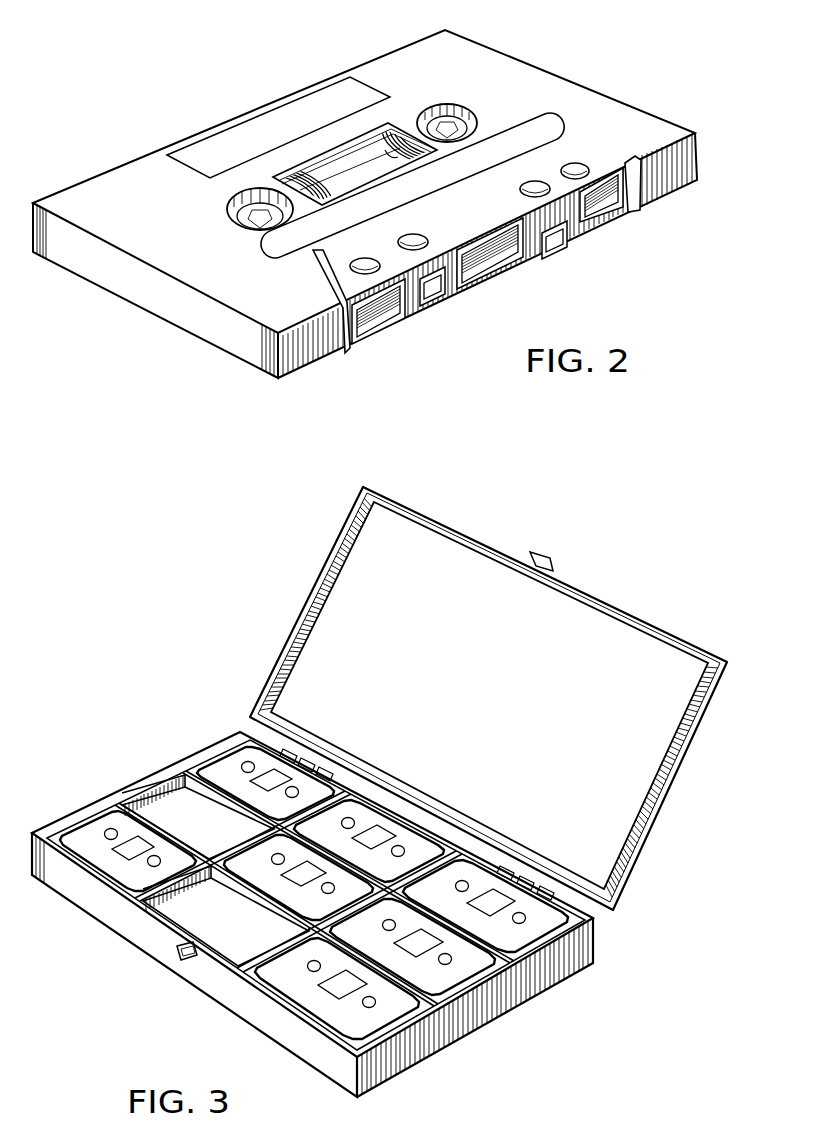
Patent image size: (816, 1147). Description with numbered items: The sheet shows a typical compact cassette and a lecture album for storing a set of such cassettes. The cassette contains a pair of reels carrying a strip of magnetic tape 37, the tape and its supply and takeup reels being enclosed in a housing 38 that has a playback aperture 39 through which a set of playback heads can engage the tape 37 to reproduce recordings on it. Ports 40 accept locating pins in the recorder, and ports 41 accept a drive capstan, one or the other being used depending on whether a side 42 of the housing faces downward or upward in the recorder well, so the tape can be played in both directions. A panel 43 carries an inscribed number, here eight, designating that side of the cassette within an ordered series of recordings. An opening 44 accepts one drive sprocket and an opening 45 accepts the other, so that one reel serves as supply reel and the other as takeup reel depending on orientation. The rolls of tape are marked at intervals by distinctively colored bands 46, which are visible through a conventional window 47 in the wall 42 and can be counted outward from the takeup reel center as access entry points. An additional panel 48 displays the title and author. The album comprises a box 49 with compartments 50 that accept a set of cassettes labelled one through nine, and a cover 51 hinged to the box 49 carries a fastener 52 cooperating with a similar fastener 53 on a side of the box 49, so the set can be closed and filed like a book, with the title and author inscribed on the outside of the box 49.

In FIG. 2, the magnetic tape 37 is at (400, 135).
In FIG. 2, the housing 38 is at (587, 113).
In FIG. 3, the housing 38 is at (540, 923).
In FIG. 2, the playback aperture 39 is at (513, 257).
In FIG. 2, the ports 40 is at (428, 243).
In FIG. 2, the ports 41 is at (582, 165).
In FIG. 2, the side 42 is at (508, 78).
In FIG. 2, the panel 43 is at (333, 94).
In FIG. 2, the opening 44 is at (450, 108).
In FIG. 2, the opening 45 is at (228, 193).
In FIG. 2, the colored bands 46 is at (337, 162).
In FIG. 2, the window 47 is at (361, 158).
In FIG. 2, the additional panel 48 is at (543, 118).
In FIG. 3, the box 49 is at (440, 1033).
In FIG. 3, the compartments 50 is at (247, 935).
In FIG. 3, the cover 51 is at (682, 776).
In FIG. 3, the fastener 52 is at (545, 557).
In FIG. 3, the fastener 53 is at (190, 960).